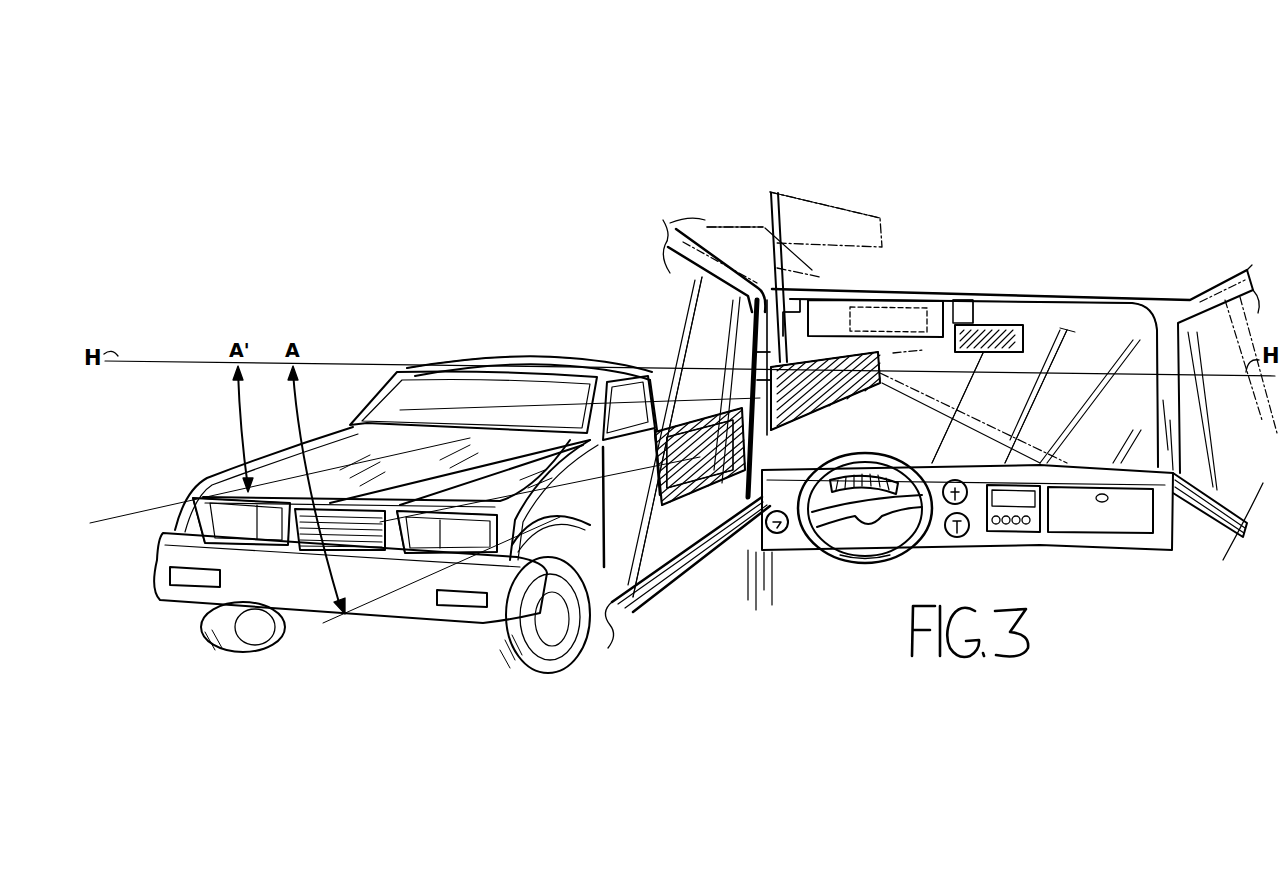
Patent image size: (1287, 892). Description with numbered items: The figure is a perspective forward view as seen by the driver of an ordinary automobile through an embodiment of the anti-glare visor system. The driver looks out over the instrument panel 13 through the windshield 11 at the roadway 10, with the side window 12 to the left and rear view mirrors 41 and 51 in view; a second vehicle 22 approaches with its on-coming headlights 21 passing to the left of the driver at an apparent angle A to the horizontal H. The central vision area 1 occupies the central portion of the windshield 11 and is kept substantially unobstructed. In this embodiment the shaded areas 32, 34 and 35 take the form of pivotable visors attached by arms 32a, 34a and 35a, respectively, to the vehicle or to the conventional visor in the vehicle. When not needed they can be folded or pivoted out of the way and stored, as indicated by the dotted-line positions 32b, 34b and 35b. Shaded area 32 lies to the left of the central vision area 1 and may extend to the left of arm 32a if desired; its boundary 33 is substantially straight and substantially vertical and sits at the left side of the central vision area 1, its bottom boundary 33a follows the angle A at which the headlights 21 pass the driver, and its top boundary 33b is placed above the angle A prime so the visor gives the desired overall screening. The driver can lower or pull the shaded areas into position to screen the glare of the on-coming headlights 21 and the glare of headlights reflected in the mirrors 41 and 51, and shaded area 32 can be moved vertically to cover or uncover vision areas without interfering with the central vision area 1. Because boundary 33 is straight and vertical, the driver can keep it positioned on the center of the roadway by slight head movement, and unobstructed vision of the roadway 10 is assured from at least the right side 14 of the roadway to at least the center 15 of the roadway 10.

The central vision area 1 is at (893, 353).
The roadway 10 is at (917, 440).
The windshield 11 is at (1115, 338).
The side window 12 is at (723, 305).
The instrument panel 13 is at (782, 533).
The right side of roadway 14 is at (977, 440).
The center of roadway 15 is at (865, 410).
The on-coming headlights 21 is at (222, 515).
The vehicle 22 is at (455, 372).
The shaded area 32 is at (867, 378).
The arm 32a is at (798, 332).
The dotted-line position 32b is at (817, 205).
The boundary 33 is at (887, 353).
The bottom boundary 33a is at (815, 402).
The top boundary 33b is at (843, 342).
The shaded area 34 is at (655, 505).
The arm 34a is at (757, 350).
The dotted-line position 34b is at (738, 237).
The shaded area 35 is at (1060, 328).
The arm 35a is at (1010, 325).
The dotted-line position 35b is at (950, 300).
The mirror 41 is at (680, 495).
The mirror 51 is at (1005, 330).